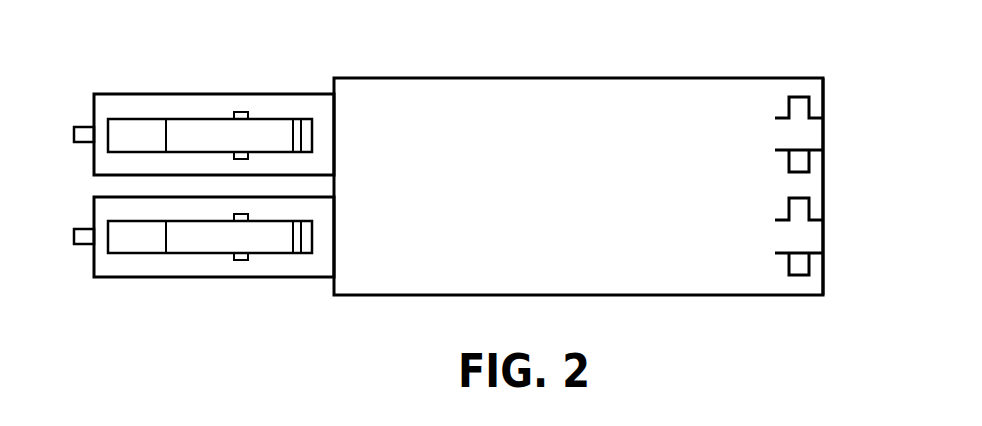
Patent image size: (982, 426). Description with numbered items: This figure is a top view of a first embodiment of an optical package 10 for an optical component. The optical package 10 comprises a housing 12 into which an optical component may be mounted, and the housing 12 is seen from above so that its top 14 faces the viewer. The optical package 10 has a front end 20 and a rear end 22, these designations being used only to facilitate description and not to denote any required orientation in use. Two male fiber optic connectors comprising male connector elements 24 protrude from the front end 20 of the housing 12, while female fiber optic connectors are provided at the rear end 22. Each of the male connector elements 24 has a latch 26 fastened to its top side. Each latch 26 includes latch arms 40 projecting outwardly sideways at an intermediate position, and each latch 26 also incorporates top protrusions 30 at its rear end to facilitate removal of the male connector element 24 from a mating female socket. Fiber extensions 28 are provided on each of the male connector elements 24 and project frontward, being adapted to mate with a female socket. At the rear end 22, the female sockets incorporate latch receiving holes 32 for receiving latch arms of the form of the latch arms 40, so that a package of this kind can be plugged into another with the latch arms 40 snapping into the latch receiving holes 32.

The optical package 10 is at (641, 35).
The housing 12 is at (502, 78).
The top 14 is at (562, 207).
The front end 20 is at (197, 187).
The rear end 22 is at (823, 278).
The male connector element 24 is at (135, 94).
The latch 26 is at (195, 119).
The fiber extension 28 is at (78, 126).
The top protrusion 30 is at (305, 125).
The latch receiving hole 32 is at (812, 133).
The latch arm 40 is at (242, 112).